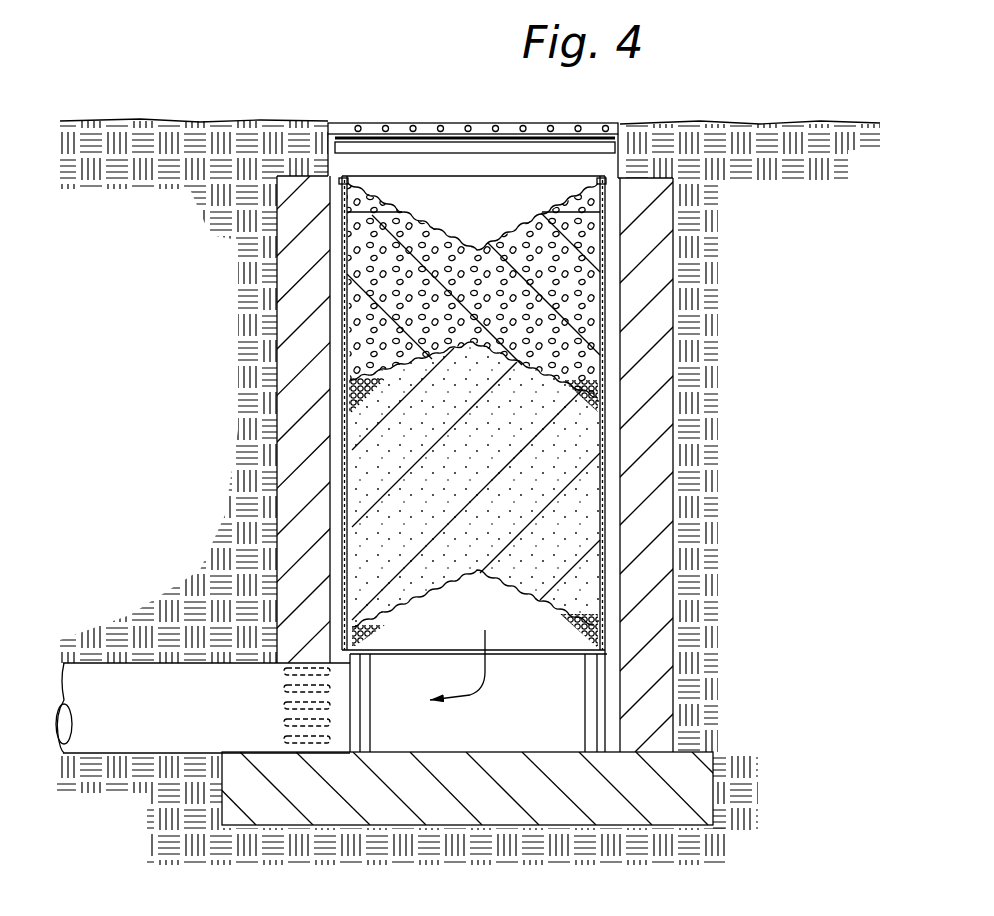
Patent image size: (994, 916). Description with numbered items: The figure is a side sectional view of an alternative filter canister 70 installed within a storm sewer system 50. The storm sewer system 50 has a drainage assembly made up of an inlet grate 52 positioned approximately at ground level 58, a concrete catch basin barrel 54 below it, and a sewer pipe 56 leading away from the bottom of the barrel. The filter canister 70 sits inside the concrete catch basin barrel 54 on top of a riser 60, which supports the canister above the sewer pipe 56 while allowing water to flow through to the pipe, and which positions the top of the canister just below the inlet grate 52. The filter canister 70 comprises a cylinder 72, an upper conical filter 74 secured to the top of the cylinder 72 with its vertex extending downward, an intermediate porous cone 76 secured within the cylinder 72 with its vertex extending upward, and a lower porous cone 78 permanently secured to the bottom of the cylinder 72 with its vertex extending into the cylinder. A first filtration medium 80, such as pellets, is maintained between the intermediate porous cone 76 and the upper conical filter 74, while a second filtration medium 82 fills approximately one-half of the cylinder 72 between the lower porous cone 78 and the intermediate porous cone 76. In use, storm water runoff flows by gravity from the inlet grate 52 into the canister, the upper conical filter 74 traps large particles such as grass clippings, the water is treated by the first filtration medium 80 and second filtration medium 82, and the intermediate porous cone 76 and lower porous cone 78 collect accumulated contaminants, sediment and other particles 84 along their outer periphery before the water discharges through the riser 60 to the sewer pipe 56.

The storm sewer system 50 is at (668, 117).
The inlet grate 52 is at (505, 120).
The concrete catch basin barrel 54 is at (647, 363).
The sewer pipe 56 is at (142, 733).
The ground level 58 is at (164, 121).
The riser 60 is at (597, 690).
The filter canister 70 is at (610, 460).
The cylinder 72 is at (345, 437).
The upper conical filter 74 is at (543, 213).
The intermediate porous cone 76 is at (347, 387).
The lower porous cone 78 is at (560, 622).
The first filtration medium 80 is at (400, 275).
The second filtration medium 82 is at (417, 508).
The contaminants, sediment and other particles 84 is at (603, 395).